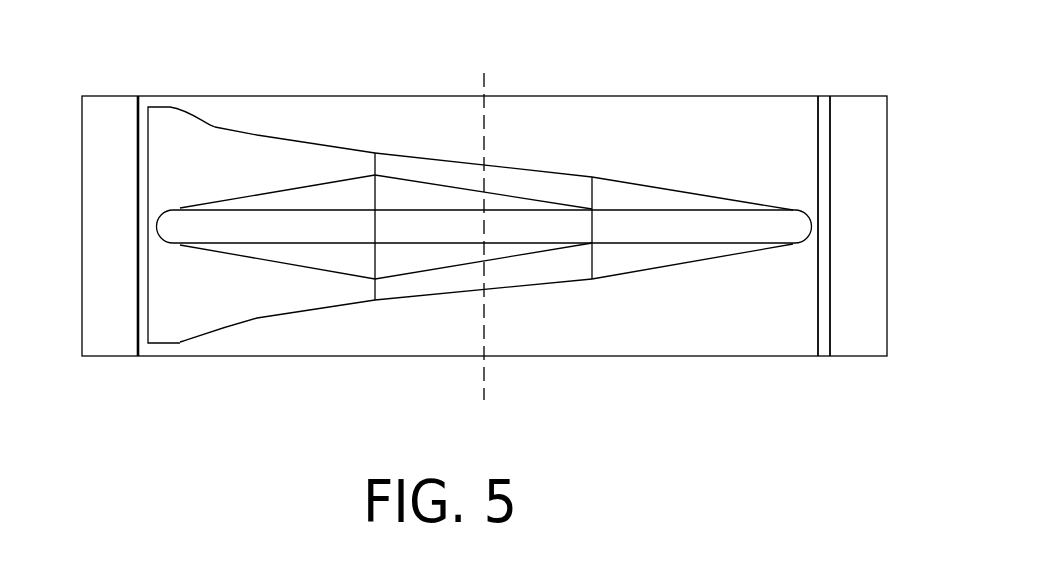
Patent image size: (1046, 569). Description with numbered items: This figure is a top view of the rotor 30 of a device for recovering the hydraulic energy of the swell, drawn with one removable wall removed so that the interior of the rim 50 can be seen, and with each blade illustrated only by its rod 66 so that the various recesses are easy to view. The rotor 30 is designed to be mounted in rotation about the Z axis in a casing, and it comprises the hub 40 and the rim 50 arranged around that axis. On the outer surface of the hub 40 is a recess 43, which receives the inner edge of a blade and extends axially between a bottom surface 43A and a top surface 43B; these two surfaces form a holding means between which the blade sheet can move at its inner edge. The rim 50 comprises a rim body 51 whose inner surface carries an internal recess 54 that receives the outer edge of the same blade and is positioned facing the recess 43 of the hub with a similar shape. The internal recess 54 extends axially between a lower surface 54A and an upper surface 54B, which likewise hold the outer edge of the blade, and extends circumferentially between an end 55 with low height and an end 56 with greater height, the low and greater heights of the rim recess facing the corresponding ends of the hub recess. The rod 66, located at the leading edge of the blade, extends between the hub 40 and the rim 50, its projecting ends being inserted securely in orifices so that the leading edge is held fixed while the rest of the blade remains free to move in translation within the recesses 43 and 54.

The rotor 30 is at (80, 35).
The hub 40 is at (573, 267).
The recess 43 is at (521, 221).
The bottom surface 43A is at (404, 262).
The top surface 43B is at (401, 190).
The rim 50 is at (107, 238).
The rim body 51 is at (343, 105).
The internal recess 54 is at (281, 232).
The bottom surface 54A is at (292, 301).
The top surface 54B is at (193, 131).
The end with low height 55 is at (180, 243).
The end with greater height 56 is at (160, 105).
The rod 66 is at (172, 228).
The Z axis Z is at (484, 80).